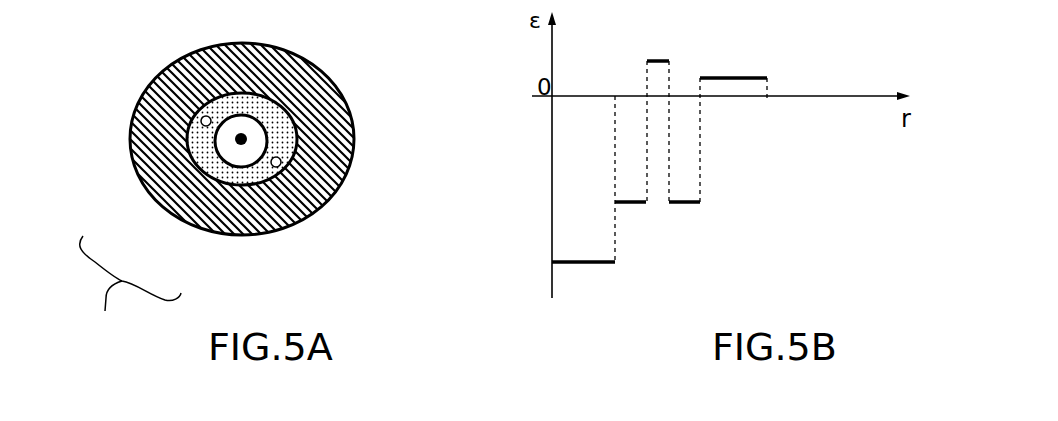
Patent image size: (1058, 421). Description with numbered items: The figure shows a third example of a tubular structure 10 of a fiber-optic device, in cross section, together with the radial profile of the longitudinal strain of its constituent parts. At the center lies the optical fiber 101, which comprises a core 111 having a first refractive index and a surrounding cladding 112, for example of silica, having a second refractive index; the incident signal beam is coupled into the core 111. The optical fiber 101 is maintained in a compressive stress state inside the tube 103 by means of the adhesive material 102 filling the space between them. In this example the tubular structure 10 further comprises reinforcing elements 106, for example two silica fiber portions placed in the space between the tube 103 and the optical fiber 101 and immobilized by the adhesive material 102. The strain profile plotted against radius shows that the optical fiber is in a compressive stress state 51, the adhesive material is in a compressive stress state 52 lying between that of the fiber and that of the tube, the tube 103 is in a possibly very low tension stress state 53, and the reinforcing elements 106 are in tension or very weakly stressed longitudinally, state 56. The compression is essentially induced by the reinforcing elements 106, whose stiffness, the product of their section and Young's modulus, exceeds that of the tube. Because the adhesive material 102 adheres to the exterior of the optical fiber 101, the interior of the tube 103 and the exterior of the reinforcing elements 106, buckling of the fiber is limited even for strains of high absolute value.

In FIG. 5A, the tubular structure 10 is at (103, 34).
In FIG. 5A, the optical fiber 101 is at (130, 291).
In FIG. 5A, the adhesive material 102 is at (273, 112).
In FIG. 5A, the tube 103 is at (237, 71).
In FIG. 5A, the reinforcing elements 106 is at (202, 120).
In FIG. 5A, the core 111 is at (197, 170).
In FIG. 5A, the cladding 112 is at (241, 139).
In FIG. 5B, the compressive stress state of the optical fiber 51 is at (582, 263).
In FIG. 5B, the compressive stress state of the adhesive material 52 is at (622, 204).
In FIG. 5B, the tension stress state of the tube 53 is at (738, 74).
In FIG. 5B, the stress state of the reinforcing elements 56 is at (645, 60).